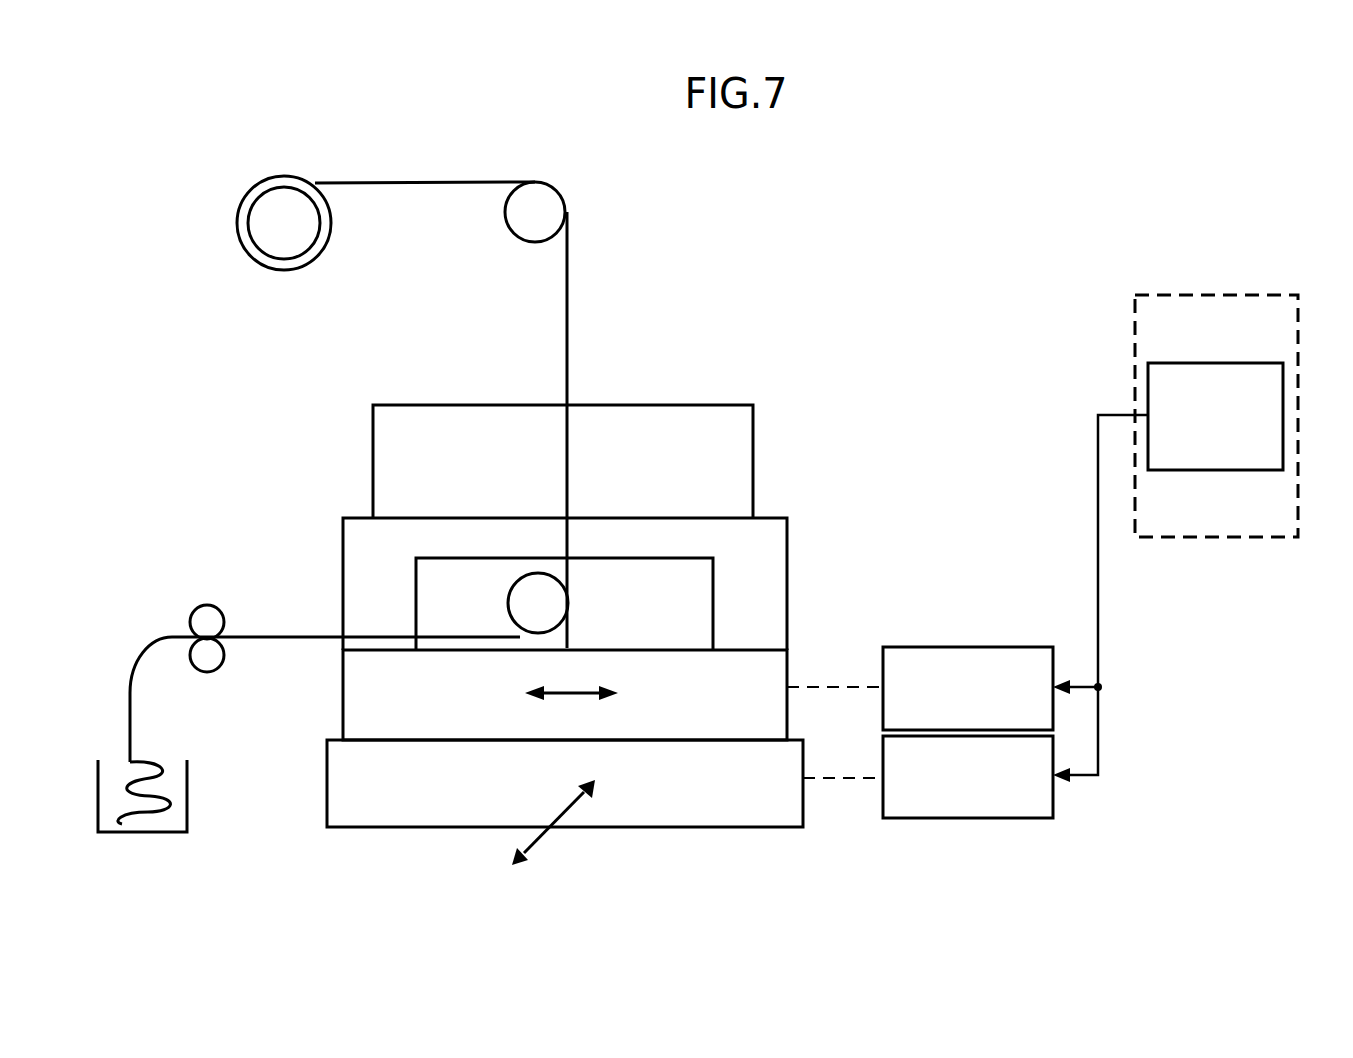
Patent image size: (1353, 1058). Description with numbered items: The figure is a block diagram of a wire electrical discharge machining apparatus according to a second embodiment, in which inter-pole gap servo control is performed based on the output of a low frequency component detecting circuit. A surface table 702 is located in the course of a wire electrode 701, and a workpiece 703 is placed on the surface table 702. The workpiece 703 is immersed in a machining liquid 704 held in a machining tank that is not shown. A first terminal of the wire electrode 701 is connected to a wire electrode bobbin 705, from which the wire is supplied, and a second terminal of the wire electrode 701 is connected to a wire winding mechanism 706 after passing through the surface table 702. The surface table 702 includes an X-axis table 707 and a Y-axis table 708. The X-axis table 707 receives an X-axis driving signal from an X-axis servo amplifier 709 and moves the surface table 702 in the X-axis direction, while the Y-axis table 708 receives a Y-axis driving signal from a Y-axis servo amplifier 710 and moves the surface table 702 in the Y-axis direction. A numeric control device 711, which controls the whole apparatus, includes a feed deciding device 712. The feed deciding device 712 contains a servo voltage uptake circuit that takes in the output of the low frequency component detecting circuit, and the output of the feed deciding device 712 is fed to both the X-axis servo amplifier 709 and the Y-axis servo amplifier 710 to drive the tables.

The wire electrode 701 is at (567, 277).
The surface table 702 is at (760, 585).
The workpiece 703 is at (717, 455).
The machining liquid 704 is at (767, 368).
The wire electrode bobbin 705 is at (282, 176).
The wire winding mechanism 706 is at (178, 608).
The X-axis table 707 is at (342, 705).
The Y-axis table 708 is at (326, 787).
The X-axis servo amplifier 709 is at (967, 647).
The Y-axis servo amplifier 710 is at (970, 818).
The numeric control device 711 is at (1142, 293).
The feed deciding device 712 is at (1217, 470).